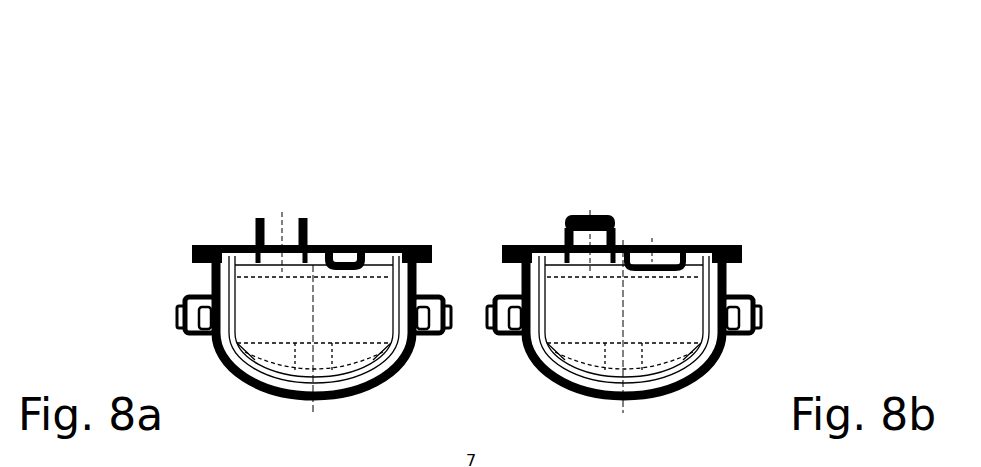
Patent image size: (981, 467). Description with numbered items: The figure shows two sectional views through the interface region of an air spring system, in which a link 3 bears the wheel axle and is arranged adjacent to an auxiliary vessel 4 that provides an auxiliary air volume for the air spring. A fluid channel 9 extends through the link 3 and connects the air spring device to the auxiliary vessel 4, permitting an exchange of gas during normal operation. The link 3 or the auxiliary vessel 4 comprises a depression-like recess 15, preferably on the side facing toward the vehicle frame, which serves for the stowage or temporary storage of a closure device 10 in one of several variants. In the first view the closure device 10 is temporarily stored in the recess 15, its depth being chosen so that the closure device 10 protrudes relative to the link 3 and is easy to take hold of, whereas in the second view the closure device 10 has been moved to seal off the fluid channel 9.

In FIG. 8A, the link 3 is at (212, 245).
In FIG. 8B, the link 3 is at (510, 247).
In FIG. 8A, the auxiliary vessel 4 is at (343, 382).
In FIG. 8B, the auxiliary vessel 4 is at (698, 384).
In FIG. 8A, the fluid channel 9 is at (287, 243).
In FIG. 8B, the fluid channel 9 is at (597, 247).
In FIG. 8B, the closure device 10 is at (571, 220).
In FIG. 8A, the recess 15 is at (350, 245).
In FIG. 8B, the recess 15 is at (675, 241).